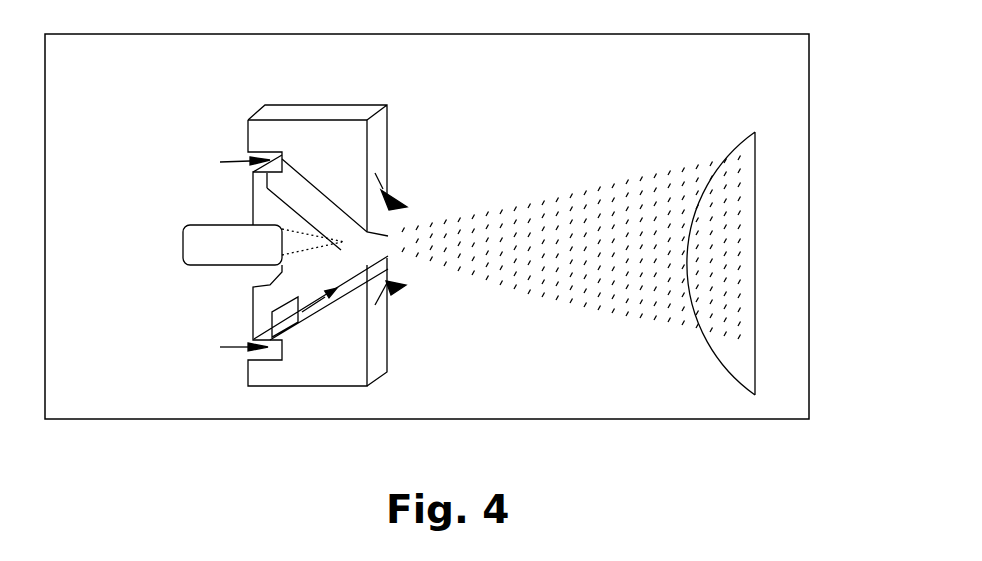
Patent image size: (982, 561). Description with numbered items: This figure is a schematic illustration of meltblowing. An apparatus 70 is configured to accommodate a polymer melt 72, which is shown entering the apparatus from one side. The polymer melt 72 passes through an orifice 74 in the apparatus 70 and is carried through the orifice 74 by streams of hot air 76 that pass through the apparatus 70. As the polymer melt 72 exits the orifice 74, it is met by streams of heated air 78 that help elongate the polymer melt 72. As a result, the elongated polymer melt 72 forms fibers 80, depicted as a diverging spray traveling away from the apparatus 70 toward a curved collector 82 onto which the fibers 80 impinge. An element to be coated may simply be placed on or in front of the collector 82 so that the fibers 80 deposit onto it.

The apparatus 70 is at (315, 131).
The polymer melt 72 is at (182, 229).
The orifice 74 is at (385, 236).
The streams of hot air 76 is at (239, 160).
The streams of heated air 78 is at (386, 189).
The fibers 80 is at (545, 258).
The collector 82 is at (733, 315).